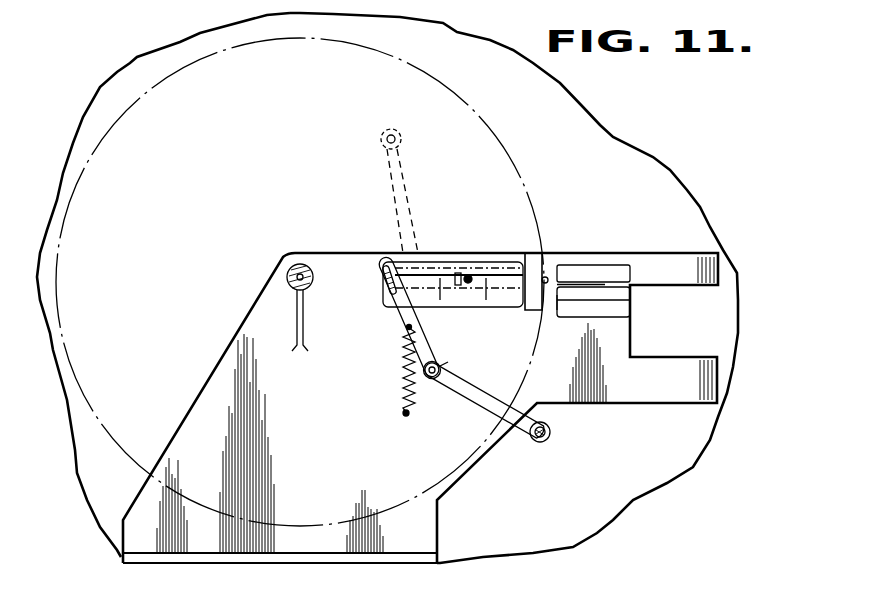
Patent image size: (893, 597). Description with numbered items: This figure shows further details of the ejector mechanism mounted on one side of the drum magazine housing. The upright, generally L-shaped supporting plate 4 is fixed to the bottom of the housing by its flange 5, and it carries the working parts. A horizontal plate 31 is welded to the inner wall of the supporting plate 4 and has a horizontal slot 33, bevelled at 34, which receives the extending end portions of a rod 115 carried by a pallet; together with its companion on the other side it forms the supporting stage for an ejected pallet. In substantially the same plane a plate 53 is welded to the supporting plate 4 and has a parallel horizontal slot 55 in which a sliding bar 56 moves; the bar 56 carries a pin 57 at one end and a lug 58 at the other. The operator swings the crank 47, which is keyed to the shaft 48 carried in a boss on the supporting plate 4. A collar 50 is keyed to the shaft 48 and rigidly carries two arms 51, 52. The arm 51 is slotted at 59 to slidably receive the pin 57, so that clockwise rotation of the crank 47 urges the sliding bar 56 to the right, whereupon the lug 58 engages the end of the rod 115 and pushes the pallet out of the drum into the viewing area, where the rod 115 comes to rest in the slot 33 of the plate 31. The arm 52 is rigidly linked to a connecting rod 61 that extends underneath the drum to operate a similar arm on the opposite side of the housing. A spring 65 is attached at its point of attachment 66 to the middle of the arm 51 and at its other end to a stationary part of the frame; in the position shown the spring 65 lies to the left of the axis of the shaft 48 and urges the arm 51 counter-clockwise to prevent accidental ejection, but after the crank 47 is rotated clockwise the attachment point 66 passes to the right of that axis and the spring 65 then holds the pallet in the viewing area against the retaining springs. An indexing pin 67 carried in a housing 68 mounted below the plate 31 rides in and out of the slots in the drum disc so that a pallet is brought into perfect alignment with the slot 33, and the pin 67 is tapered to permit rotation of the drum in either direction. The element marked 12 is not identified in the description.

The supporting plate 4 is at (120, 556).
The flange 5 is at (228, 556).
The pin 12 is at (538, 297).
The plate 31 is at (619, 271).
The horizontal slot 33 is at (608, 287).
The bevel 34 is at (556, 302).
The crank 47 is at (408, 194).
The shaft 48 is at (426, 380).
The collar 50 is at (440, 366).
The arm 51 is at (405, 328).
The arm 52 is at (480, 390).
The plate 53 is at (500, 263).
The horizontal slot 55 is at (488, 277).
The sliding bar 56 is at (443, 277).
The pin 57 is at (379, 283).
The lug 58 is at (457, 273).
The slot 59 is at (394, 305).
The connecting rod 61 is at (541, 443).
The spring 65 is at (401, 409).
The point of attachment 66 is at (386, 370).
The indexing pin 67 is at (558, 305).
The housing 68 is at (598, 311).
The rod 115 is at (469, 276).